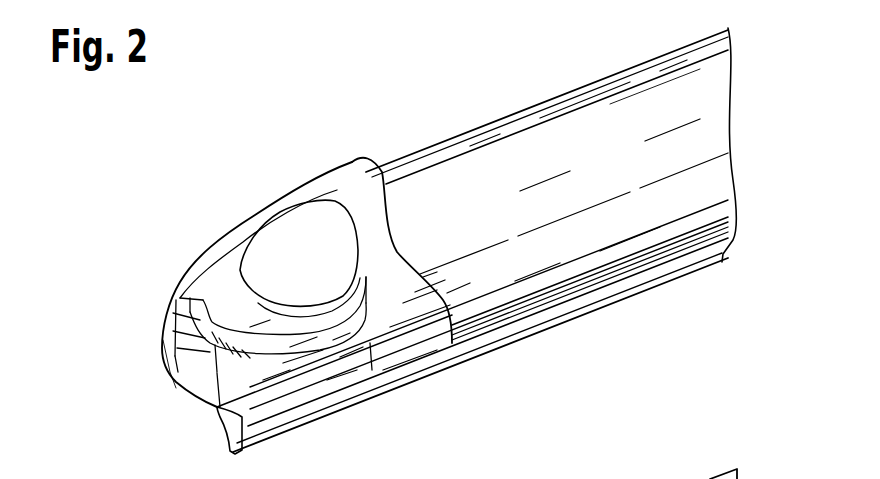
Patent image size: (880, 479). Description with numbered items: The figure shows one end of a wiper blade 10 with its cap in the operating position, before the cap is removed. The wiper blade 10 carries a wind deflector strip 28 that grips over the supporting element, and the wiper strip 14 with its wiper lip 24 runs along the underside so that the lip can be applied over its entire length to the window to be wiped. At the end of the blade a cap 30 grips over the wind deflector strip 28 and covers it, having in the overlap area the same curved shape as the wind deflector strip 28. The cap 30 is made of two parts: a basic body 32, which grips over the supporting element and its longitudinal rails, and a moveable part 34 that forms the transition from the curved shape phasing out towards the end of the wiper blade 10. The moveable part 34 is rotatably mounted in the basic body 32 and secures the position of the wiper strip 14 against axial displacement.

The wiper blade 10 is at (598, 52).
The wiper strip 14 is at (188, 423).
The wiper lip 24 is at (613, 292).
The wind deflector strip 28 is at (470, 163).
The cap 30 is at (288, 166).
The basic body 32 is at (163, 347).
The moveable part 34 is at (243, 237).